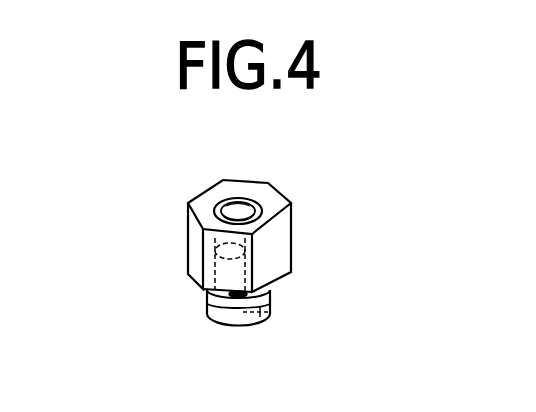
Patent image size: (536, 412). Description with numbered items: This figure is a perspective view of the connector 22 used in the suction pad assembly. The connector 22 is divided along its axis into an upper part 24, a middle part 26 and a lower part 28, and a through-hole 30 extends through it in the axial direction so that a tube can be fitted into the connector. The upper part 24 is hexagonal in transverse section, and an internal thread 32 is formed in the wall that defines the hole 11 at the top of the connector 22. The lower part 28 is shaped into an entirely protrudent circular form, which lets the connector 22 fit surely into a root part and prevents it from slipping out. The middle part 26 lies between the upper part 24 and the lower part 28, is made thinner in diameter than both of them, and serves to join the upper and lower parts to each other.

The hole 11 is at (270, 203).
The connector 22 is at (297, 246).
The upper part 24 is at (192, 232).
The middle part 26 is at (235, 293).
The lower part 28 is at (207, 312).
The through-hole 30 is at (265, 312).
The internal thread 32 is at (229, 197).